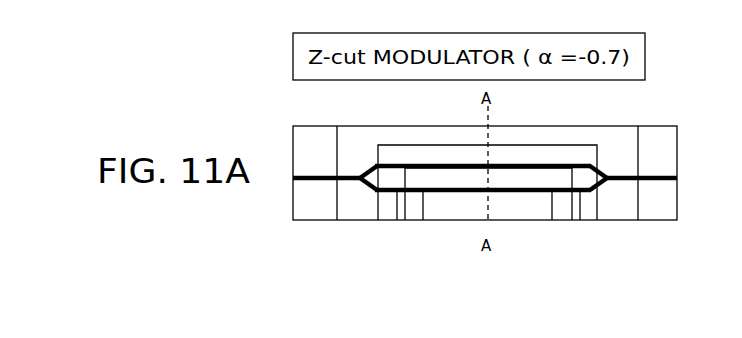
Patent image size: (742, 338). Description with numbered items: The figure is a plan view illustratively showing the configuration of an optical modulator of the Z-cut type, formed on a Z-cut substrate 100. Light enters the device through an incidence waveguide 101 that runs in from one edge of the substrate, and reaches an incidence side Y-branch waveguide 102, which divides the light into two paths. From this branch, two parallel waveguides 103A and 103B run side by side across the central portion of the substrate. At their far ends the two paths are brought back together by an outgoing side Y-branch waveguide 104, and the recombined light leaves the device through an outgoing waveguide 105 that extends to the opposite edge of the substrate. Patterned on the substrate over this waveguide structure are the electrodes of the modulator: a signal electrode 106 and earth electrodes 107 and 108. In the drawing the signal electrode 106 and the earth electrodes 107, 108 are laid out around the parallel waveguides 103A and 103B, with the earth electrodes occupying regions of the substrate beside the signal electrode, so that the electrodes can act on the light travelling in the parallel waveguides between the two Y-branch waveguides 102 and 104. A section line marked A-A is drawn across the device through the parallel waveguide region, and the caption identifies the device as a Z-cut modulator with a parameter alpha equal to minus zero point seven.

The Z-cut substrate 100 is at (651, 136).
The incidence waveguide 101 is at (313, 180).
The incidence side Y-branch waveguide 102 is at (363, 186).
The parallel waveguide 103A is at (433, 162).
The parallel waveguide 103B is at (528, 192).
The outgoing side Y-branch waveguide 104 is at (603, 181).
The outgoing waveguide 105 is at (657, 177).
The signal electrode 106 is at (400, 212).
The earth electrode 107 is at (366, 210).
The earth electrode 108 is at (447, 208).